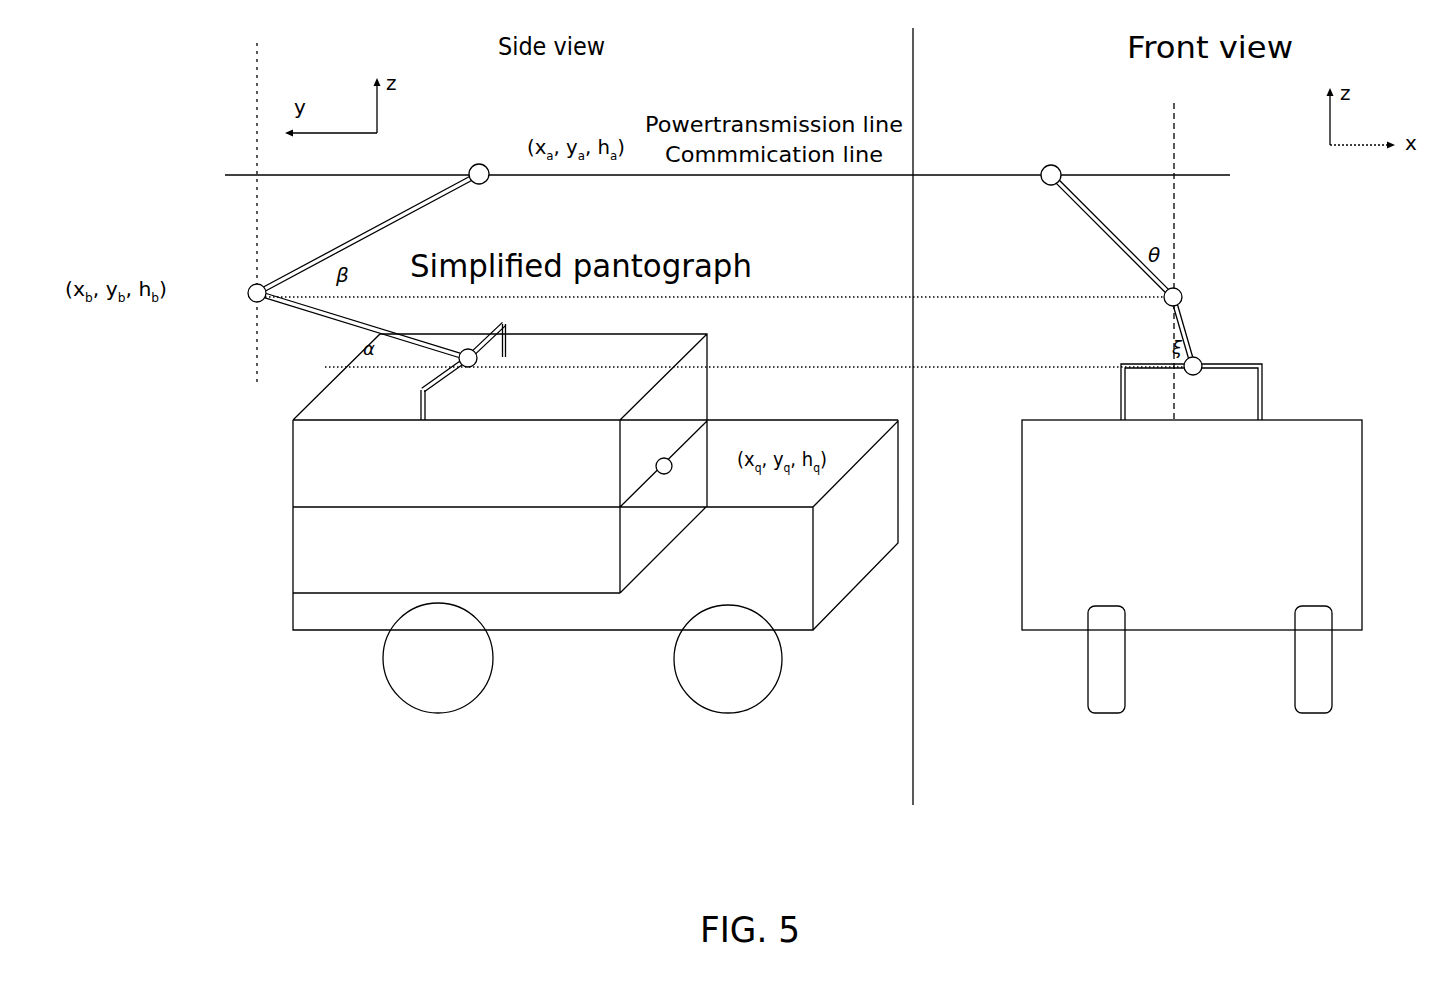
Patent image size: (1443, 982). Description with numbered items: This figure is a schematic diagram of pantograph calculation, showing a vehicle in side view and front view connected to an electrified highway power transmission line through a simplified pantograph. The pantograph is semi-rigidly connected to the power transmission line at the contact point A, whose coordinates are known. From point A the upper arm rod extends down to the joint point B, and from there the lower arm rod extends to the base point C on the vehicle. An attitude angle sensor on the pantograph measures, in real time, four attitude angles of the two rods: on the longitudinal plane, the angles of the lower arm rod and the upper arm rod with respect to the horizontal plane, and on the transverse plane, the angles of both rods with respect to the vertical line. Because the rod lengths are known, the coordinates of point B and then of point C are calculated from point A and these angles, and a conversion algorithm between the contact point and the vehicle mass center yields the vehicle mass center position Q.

The contact point on the power transmission line A is at (765, 157).
The joint point between upper arm rod and lower arm rod B is at (712, 291).
The lower end point of lower arm rod on the vehicle C is at (843, 368).
The vehicle mass center position Q is at (677, 462).